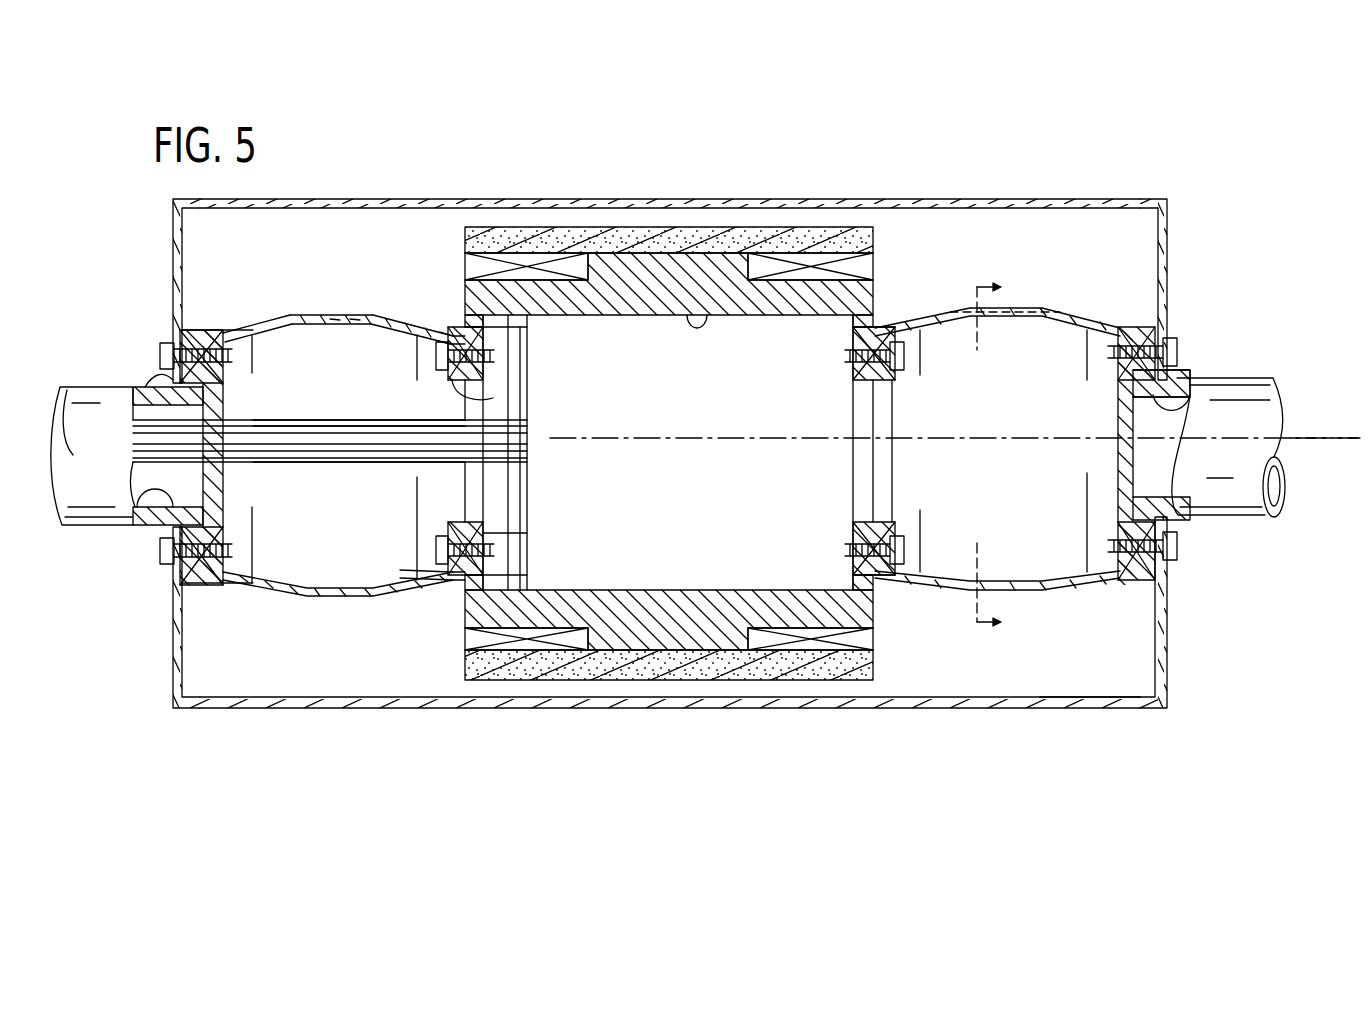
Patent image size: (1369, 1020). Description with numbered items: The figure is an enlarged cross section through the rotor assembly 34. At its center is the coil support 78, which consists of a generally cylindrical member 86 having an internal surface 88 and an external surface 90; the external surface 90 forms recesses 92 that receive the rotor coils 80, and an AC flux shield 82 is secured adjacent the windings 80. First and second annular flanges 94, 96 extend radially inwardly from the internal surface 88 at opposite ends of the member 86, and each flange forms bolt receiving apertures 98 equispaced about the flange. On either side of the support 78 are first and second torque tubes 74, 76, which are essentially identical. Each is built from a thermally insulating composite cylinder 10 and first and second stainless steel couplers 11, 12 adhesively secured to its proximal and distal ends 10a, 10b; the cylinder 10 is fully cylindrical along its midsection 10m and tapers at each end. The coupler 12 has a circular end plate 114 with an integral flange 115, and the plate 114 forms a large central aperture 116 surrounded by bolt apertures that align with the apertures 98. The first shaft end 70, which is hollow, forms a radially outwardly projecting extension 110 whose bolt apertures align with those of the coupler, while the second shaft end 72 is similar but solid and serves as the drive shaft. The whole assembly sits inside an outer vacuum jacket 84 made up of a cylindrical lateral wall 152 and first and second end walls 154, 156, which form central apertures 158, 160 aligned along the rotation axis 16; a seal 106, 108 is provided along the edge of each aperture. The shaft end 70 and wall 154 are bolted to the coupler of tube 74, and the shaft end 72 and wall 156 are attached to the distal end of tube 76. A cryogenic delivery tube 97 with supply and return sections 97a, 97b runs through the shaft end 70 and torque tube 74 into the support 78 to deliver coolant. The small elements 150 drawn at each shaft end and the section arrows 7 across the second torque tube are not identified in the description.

The section line 7- 7 is at (978, 459).
The thermally insulating composite cylinder 10 is at (330, 592).
The proximal end of cylinder 10a is at (388, 318).
The distal end of cylinder 10b is at (277, 318).
The midsection of cylinder 10m is at (323, 318).
The first stainless steel coupler 11 is at (237, 330).
The second stainless steel coupler 12 is at (423, 325).
The rotation axis 16 is at (1300, 432).
The rotor assembly 34 is at (644, 176).
The first shaft end 70 is at (98, 410).
The second shaft end 72 is at (1233, 503).
The first torque tube 74 is at (347, 322).
The second torque tube 76 is at (1020, 308).
The coil support 78 is at (623, 283).
The rotor coils 80 is at (540, 647).
The AC flux shield 82 is at (663, 672).
The outer vacuum jacket 84 is at (970, 697).
The generally cylindrical member 86 is at (768, 288).
The internal surface 88 is at (720, 318).
The external surface 90 is at (690, 318).
The recesses 92 is at (820, 270).
The first annular flange 94 is at (473, 337).
The second annular flange 96 is at (853, 567).
The cryogenic delivery tube 97 is at (316, 408).
The supply section 97a is at (345, 427).
The return section 97b is at (337, 452).
The bolt receiving apertures 98 is at (434, 551).
The seal 106 is at (173, 530).
The seal 108 is at (1262, 488).
The radially outwardly projecting extension 110 is at (1143, 331).
The circular end plate 114 is at (450, 533).
The flange 115 is at (423, 590).
The large central aperture 116 is at (460, 392).
The seal 150 is at (150, 497).
The cylindrical lateral wall 152 is at (1065, 700).
The first end wall 154 is at (180, 685).
The second end wall 156 is at (1167, 667).
The central aperture 158 is at (155, 383).
The central aperture 160 is at (1190, 388).